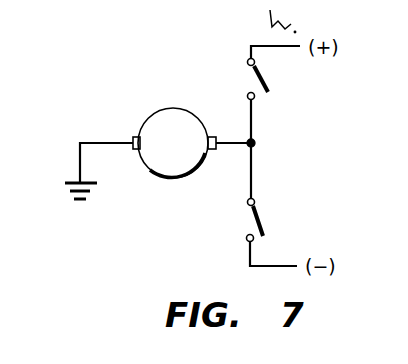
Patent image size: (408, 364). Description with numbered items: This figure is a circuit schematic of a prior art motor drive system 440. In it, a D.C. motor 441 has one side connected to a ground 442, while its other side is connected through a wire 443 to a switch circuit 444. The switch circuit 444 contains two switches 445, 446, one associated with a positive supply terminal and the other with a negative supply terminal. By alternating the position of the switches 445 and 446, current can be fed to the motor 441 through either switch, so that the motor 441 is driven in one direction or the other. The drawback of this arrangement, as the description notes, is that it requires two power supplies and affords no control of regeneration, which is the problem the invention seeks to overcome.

The motor assembly 440 is at (172, 119).
The D.C. motor 441 is at (163, 70).
The ground 442 is at (105, 140).
The wire 443 is at (232, 148).
The switch circuit 444 is at (258, 122).
The switch 445 is at (268, 82).
The switch 446 is at (266, 226).